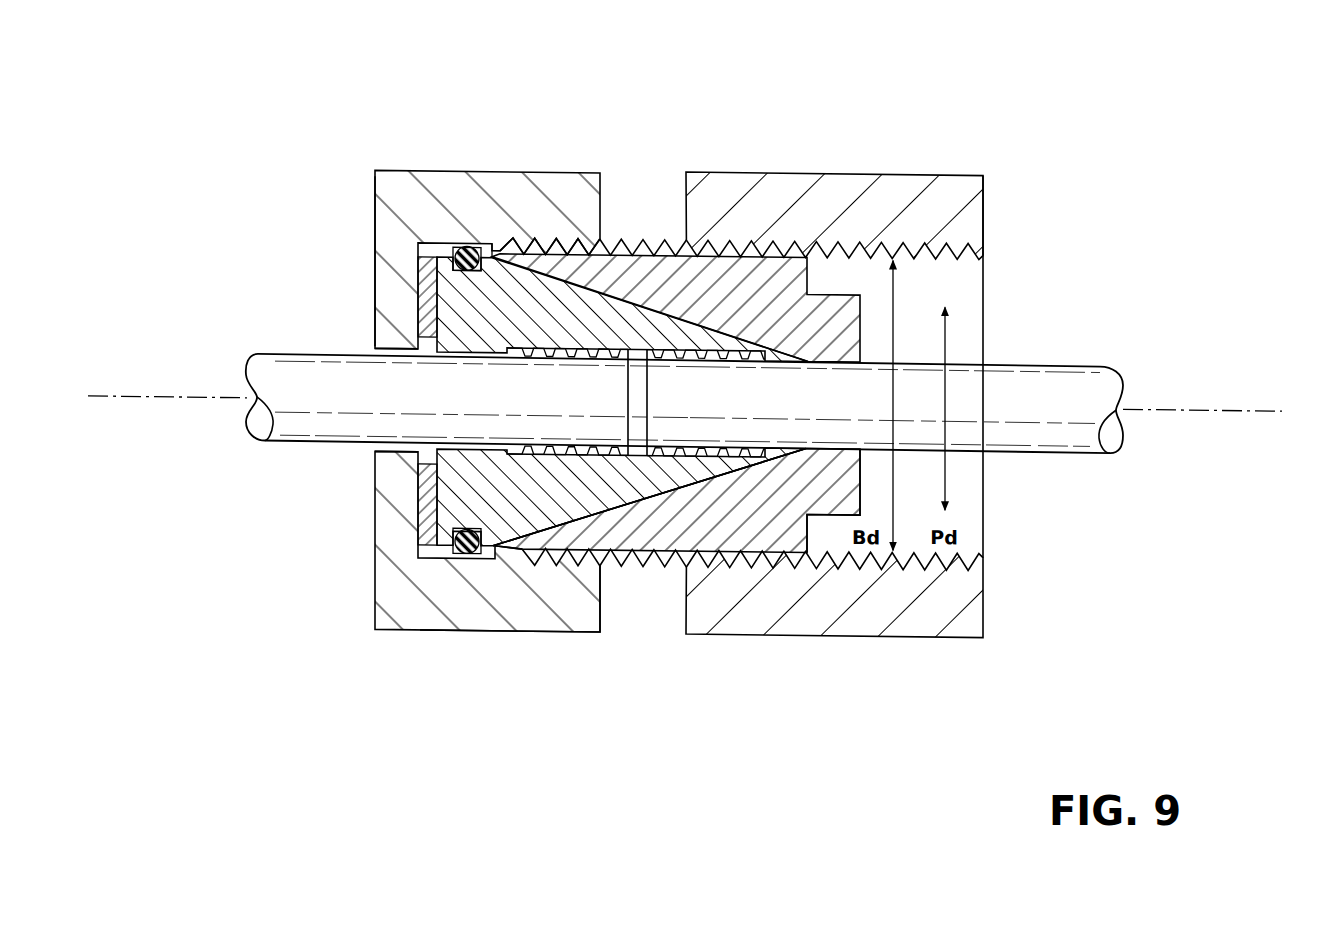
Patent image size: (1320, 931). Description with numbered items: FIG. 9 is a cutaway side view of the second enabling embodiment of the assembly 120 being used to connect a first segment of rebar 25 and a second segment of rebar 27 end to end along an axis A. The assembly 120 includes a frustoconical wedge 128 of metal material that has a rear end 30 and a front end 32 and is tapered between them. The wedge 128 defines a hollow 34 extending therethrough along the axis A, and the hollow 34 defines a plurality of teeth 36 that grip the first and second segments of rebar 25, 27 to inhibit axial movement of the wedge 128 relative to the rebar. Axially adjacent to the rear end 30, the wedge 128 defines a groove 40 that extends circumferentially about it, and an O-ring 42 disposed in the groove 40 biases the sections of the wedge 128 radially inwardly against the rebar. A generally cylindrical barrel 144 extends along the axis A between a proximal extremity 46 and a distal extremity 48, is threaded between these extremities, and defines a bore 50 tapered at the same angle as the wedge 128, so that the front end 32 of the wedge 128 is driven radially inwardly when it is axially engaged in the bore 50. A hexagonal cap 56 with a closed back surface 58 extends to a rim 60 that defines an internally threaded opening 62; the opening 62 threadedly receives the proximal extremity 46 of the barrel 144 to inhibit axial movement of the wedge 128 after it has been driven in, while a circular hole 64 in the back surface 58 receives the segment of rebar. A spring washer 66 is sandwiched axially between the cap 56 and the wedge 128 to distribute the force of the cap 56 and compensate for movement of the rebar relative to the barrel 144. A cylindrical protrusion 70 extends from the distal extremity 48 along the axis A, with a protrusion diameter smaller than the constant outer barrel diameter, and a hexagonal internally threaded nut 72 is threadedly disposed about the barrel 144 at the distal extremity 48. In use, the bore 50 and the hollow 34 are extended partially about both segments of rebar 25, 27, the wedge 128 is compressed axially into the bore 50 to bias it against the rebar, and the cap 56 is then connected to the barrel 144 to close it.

The first segment of rebar 25 is at (310, 440).
The second segment of rebar 27 is at (1068, 440).
The rear end 30 is at (425, 325).
The front end 32 is at (763, 352).
The hollow 34 is at (647, 372).
The teeth 36 is at (602, 444).
The groove 40 is at (498, 560).
The O-ring 42 is at (470, 560).
The proximal extremity 46 is at (480, 245).
The distal extremity 48 is at (808, 257).
The bore 50 is at (675, 315).
The cap 56 is at (364, 194).
The back surface 58 is at (373, 259).
The rim 60 is at (601, 612).
The opening 62 is at (573, 244).
The hole 64 is at (385, 372).
The spring washer 66 is at (420, 486).
The protrusion 70 is at (832, 508).
The nut 72 is at (941, 154).
The assembly 120 is at (1038, 151).
The wedge 128 is at (643, 520).
The barrel 144 is at (621, 228).
The axis A is at (137, 401).